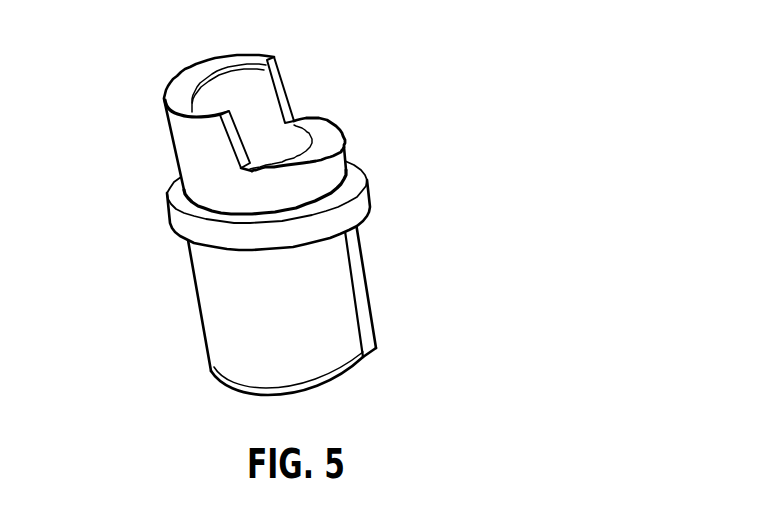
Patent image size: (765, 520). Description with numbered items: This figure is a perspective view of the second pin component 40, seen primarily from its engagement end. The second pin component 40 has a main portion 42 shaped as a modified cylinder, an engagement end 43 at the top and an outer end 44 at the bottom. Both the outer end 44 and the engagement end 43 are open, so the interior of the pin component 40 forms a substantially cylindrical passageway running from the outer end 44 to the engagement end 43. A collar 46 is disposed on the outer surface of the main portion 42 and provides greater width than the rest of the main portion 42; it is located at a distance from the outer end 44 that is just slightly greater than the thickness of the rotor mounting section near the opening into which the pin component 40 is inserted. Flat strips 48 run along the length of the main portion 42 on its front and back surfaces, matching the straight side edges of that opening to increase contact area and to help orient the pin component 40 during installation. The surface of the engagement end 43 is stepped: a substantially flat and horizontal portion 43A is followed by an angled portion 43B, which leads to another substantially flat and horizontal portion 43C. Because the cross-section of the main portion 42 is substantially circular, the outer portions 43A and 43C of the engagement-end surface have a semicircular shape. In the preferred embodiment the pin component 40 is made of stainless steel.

The second pin component 40 is at (70, 130).
The main portion 42 is at (204, 296).
The engagement end 43 is at (186, 77).
The substantially flat and horizontal portion 43A is at (323, 137).
The angled portion 43B is at (241, 142).
The substantially flat and horizontal portion 43C is at (228, 56).
The outer end 44 is at (327, 387).
The collar 46 is at (169, 222).
The flat strips 48 is at (356, 278).